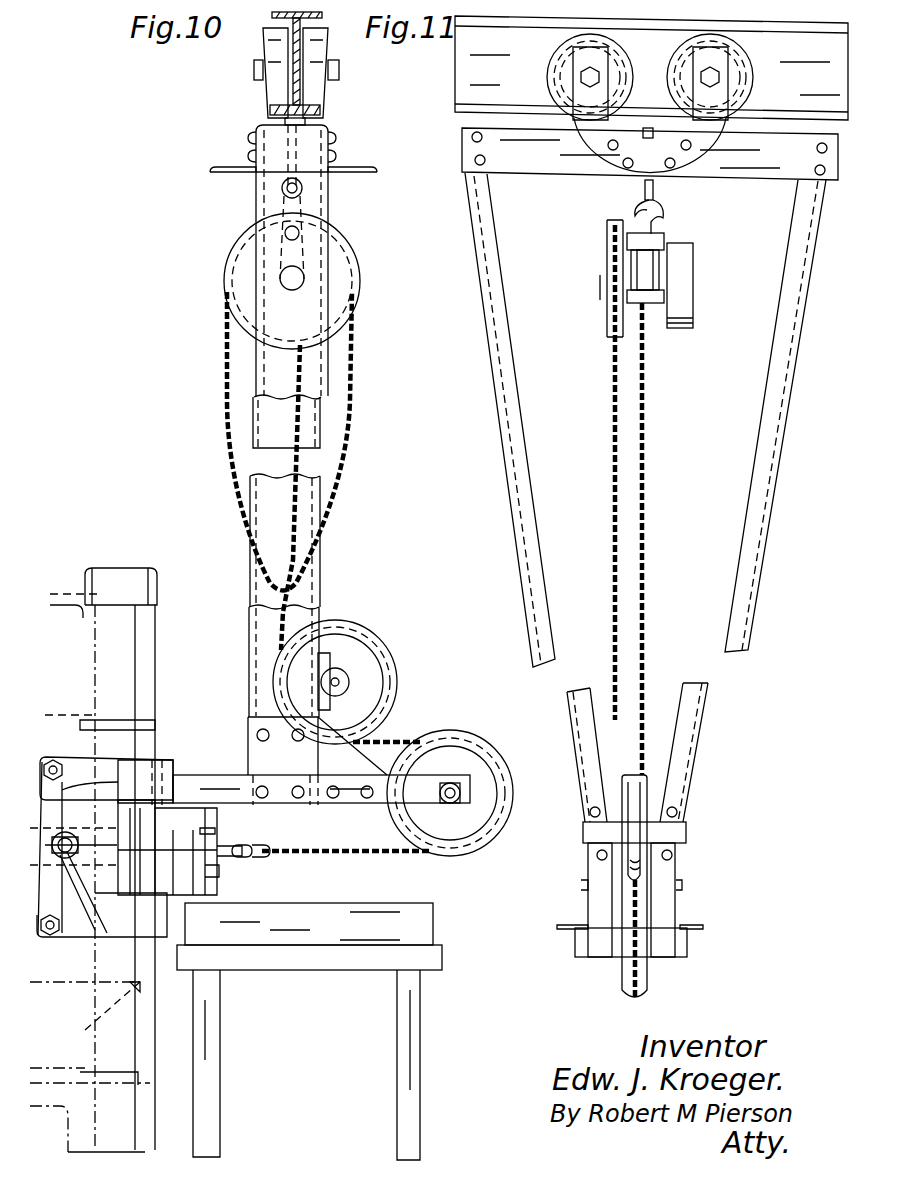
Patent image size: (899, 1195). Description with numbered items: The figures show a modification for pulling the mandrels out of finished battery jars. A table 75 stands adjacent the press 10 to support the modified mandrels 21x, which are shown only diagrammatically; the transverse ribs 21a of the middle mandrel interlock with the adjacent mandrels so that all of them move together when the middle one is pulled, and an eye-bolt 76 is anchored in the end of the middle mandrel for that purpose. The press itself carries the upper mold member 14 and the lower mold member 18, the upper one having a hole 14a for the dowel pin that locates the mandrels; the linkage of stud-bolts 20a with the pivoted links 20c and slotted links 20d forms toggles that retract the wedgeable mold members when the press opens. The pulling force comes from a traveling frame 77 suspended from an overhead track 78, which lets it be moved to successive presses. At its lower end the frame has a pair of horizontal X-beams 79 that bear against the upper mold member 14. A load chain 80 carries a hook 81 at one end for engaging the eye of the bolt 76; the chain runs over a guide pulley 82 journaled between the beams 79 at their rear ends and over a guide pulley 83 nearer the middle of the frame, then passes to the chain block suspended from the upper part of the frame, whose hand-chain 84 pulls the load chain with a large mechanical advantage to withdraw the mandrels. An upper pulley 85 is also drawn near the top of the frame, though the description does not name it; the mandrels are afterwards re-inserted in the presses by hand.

In FIG. 10, the press 10 is at (118, 678).
In FIG. 10, the mold member 14 is at (80, 762).
In FIG. 10, the hole 14a is at (152, 807).
In FIG. 10, the mold member 18 is at (70, 917).
In FIG. 10, the stud-bolt 20a is at (62, 898).
In FIG. 10, the link 20c is at (60, 792).
In FIG. 10, the link 20d is at (80, 900).
In FIG. 10, the rib 21a is at (128, 832).
In FIG. 10, the modified mandrel 21x is at (210, 831).
In FIG. 10, the table 75 is at (430, 925).
In FIG. 10, the eye-bolt 76 is at (222, 862).
In FIG. 10, the traveling frame 77 is at (290, 425).
In FIG. 11, the traveling frame 77 is at (490, 240).
In FIG. 10, the overhead track 78 is at (272, 15).
In FIG. 11, the overhead track 78 is at (495, 60).
In FIG. 10, the horizontal X-beam 79 is at (236, 775).
In FIG. 11, the horizontal X-beam 79 is at (562, 926).
In FIG. 10, the load chain 80 is at (296, 530).
In FIG. 11, the load chain 80 is at (646, 514).
In FIG. 10, the hook 81 is at (252, 858).
In FIG. 10, the guide pulley 82 is at (460, 760).
In FIG. 10, the guide pulley / chain block 83 is at (368, 690).
In FIG. 11, the guide pulley / chain block 83 is at (660, 262).
In FIG. 10, the hand-chain 84 is at (348, 472).
In FIG. 11, the hand-chain 84 is at (608, 418).
In FIG. 10, the pulley 85 is at (302, 278).